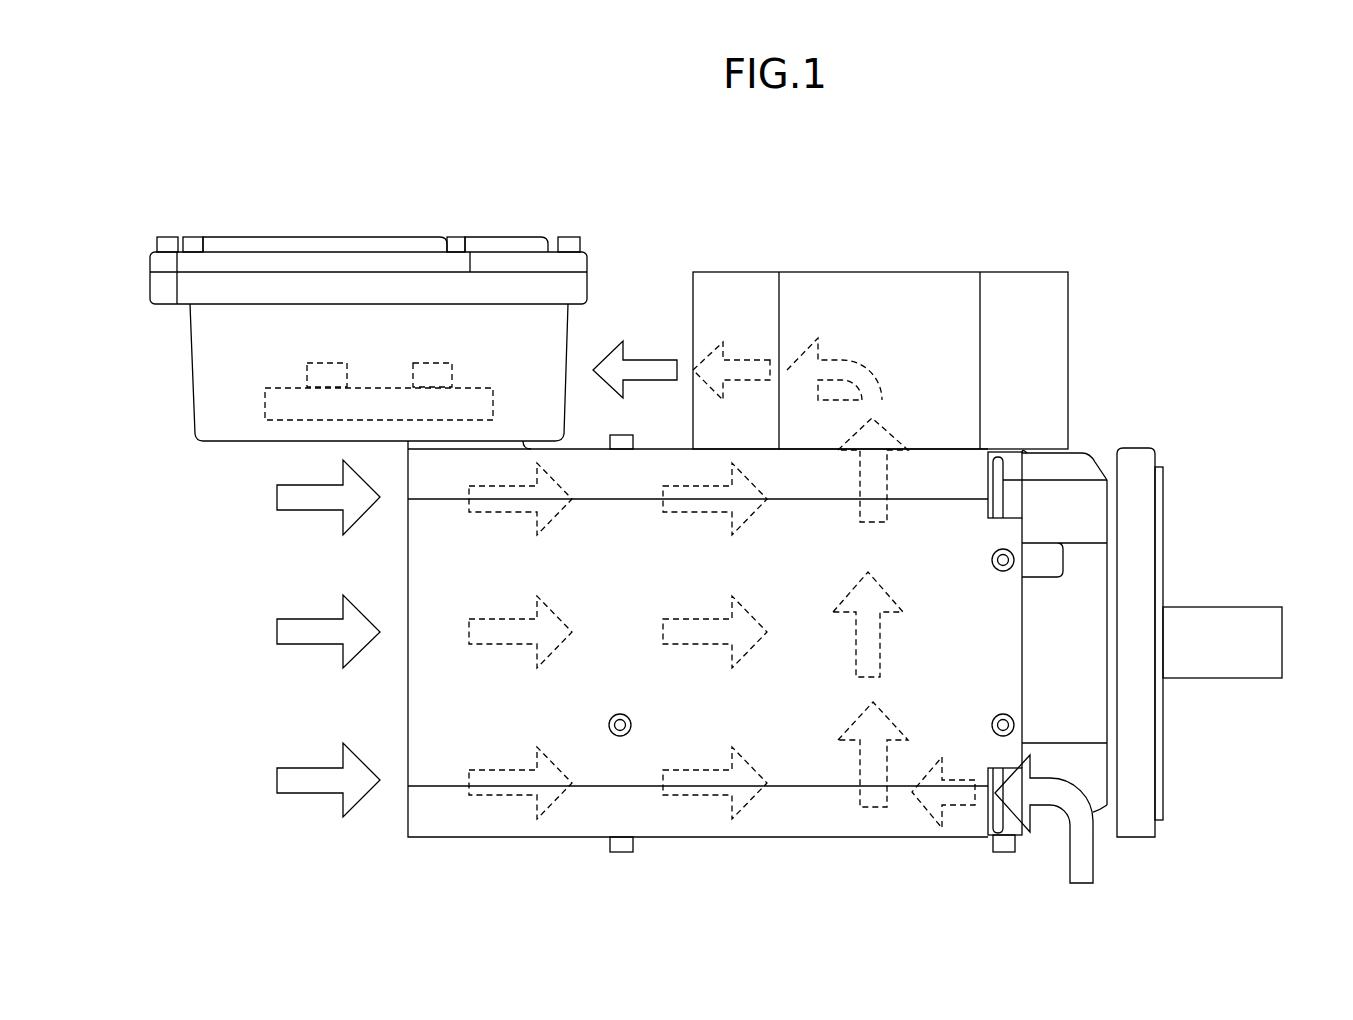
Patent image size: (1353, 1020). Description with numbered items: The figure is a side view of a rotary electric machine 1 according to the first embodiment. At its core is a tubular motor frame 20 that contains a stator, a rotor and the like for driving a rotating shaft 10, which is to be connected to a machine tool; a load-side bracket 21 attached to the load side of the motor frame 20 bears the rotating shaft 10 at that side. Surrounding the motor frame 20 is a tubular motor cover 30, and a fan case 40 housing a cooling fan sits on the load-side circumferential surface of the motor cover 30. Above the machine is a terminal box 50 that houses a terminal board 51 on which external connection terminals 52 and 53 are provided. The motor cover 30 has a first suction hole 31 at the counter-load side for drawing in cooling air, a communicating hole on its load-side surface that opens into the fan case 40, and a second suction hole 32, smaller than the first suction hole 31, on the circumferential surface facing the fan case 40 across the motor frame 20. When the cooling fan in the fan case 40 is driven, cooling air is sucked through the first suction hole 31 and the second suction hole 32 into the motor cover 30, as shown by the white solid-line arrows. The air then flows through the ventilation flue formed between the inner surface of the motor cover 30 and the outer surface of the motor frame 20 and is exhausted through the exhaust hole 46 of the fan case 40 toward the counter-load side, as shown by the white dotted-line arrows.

The rotary electric machine 1 is at (603, 172).
The rotating shaft 10 is at (1242, 617).
The motor frame 20 is at (1083, 586).
The load-side bracket 21 is at (1135, 455).
The motor cover 30 is at (596, 753).
The first suction hole 31 is at (401, 680).
The second suction hole 32 is at (1000, 793).
The fan case 40 is at (1058, 327).
The exhaust hole 46 is at (681, 333).
The terminal box 50 is at (235, 237).
The terminal board 51 is at (265, 401).
The external connection terminal 52 is at (325, 363).
The external connection terminal 53 is at (433, 363).